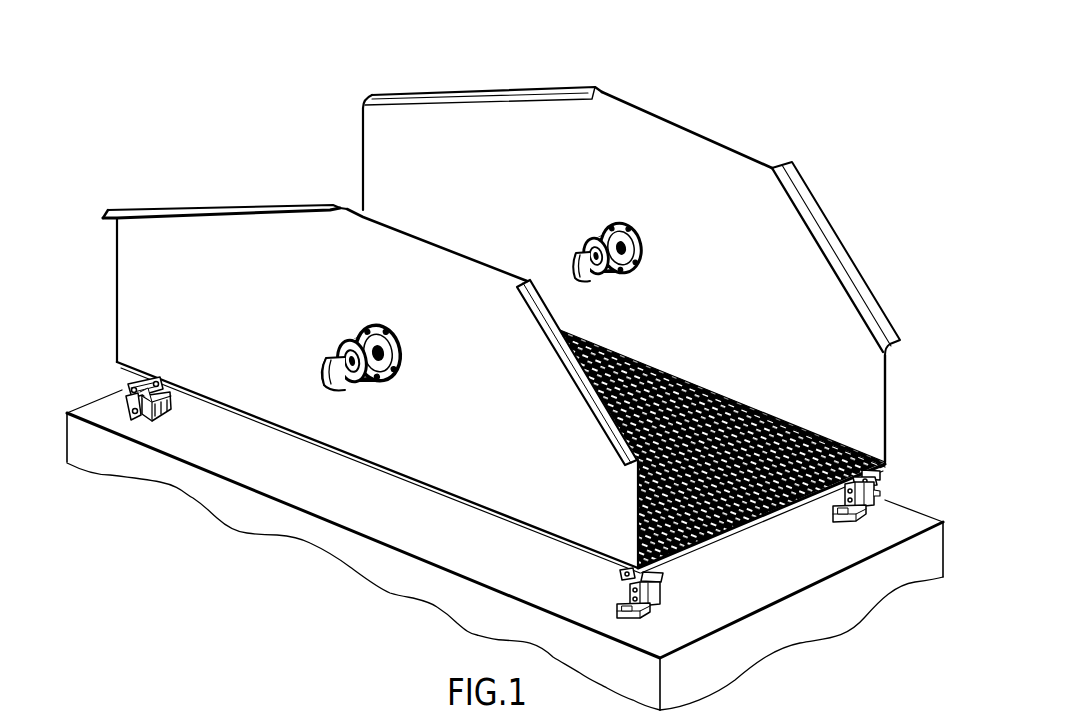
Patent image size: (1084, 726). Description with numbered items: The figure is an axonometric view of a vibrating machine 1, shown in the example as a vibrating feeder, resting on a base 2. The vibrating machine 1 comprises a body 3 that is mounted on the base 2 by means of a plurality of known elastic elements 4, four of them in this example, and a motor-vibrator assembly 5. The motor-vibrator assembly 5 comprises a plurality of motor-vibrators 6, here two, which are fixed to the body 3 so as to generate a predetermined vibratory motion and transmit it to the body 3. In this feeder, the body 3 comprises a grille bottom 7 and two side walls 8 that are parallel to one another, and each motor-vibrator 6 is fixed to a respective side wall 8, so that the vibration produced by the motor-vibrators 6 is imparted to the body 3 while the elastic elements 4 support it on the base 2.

The vibrating machine 1 is at (680, 95).
The base 2 is at (358, 514).
The body 3 is at (898, 412).
The elastic elements 4 is at (122, 388).
The motor-vibrator assembly 5 is at (306, 316).
The motor-vibrators 6 is at (360, 382).
The grille bottom 7 is at (735, 537).
The side walls 8 is at (117, 263).